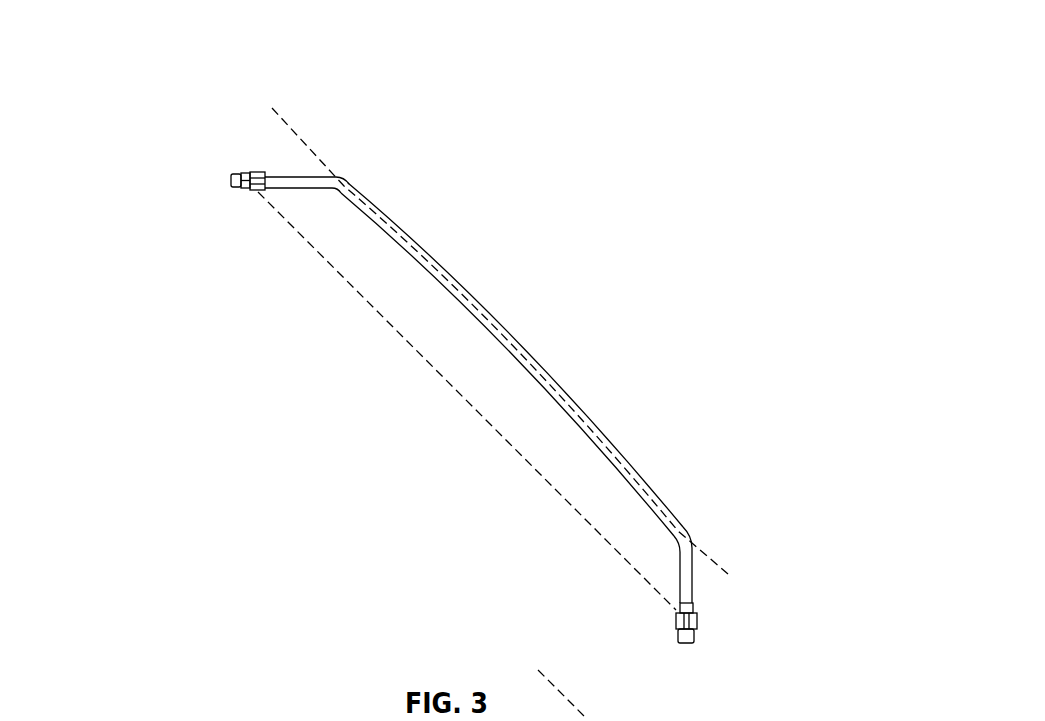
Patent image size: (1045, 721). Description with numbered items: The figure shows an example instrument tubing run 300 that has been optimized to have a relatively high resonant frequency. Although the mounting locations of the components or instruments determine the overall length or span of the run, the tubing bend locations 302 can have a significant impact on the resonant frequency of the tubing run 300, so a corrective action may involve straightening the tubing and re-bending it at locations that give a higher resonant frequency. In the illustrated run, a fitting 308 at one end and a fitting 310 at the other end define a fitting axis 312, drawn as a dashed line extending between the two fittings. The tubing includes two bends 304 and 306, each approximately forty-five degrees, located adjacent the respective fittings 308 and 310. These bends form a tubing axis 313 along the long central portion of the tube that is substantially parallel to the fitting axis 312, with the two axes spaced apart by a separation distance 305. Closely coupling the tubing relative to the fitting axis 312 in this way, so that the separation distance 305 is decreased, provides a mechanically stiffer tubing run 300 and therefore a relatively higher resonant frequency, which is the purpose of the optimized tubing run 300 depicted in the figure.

The instrument tubing run 300 is at (738, 171).
The tubing bend locations 302 is at (443, 146).
The bend 304 is at (340, 177).
The separation distance 305 is at (540, 371).
The bend 306 is at (686, 530).
The fitting 308 is at (258, 170).
The fitting 310 is at (700, 620).
The fitting axis 312 is at (488, 423).
The tubing axis 313 is at (718, 562).